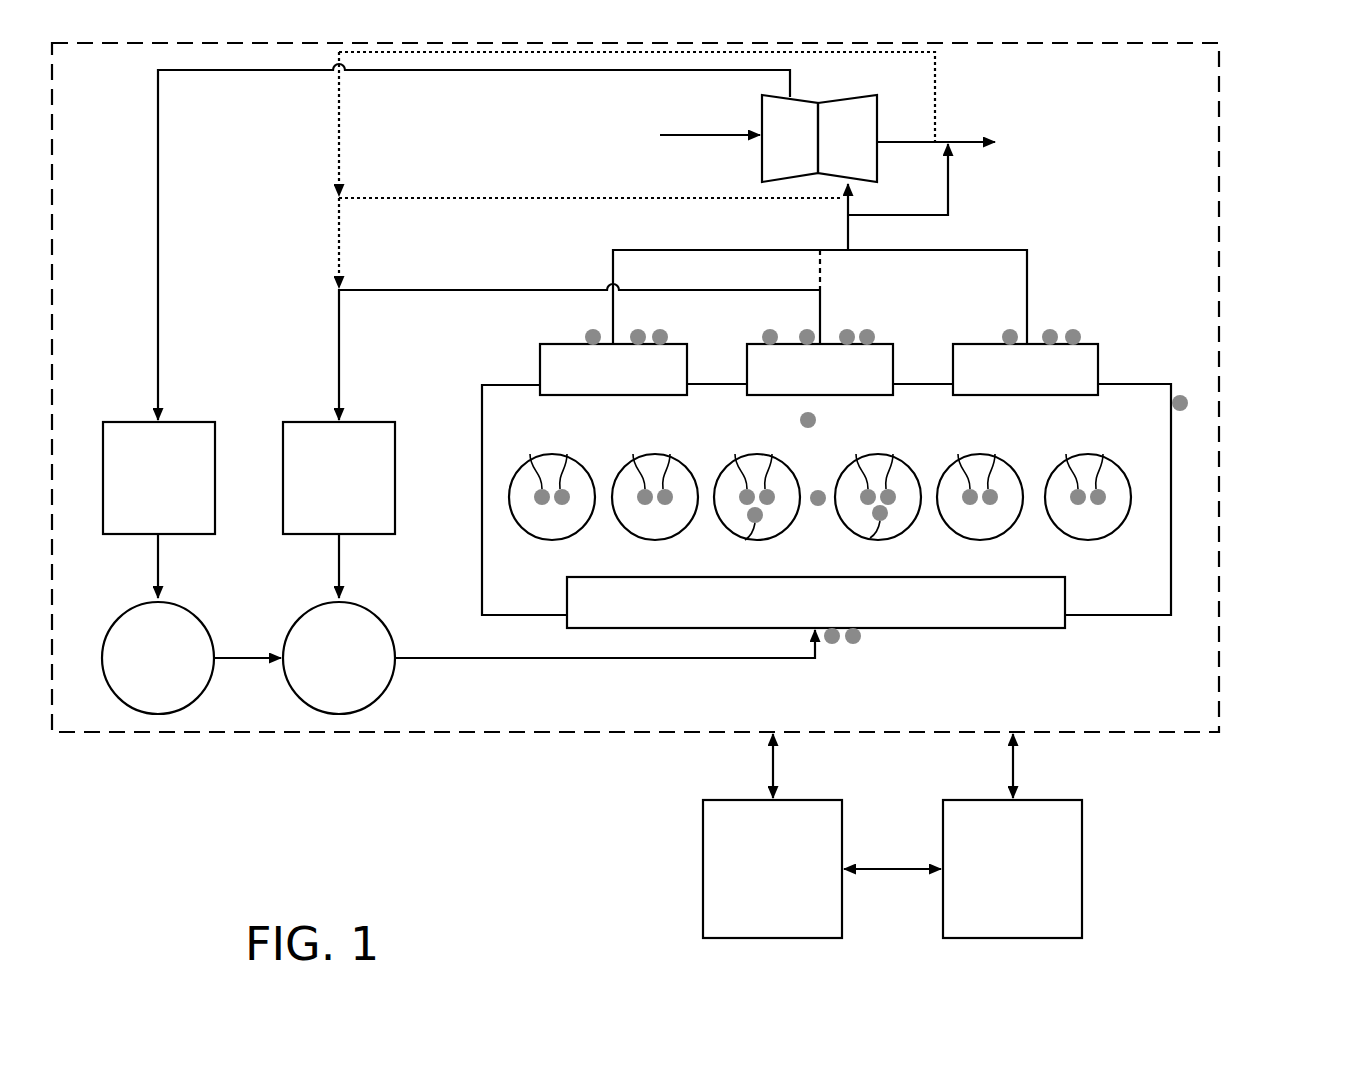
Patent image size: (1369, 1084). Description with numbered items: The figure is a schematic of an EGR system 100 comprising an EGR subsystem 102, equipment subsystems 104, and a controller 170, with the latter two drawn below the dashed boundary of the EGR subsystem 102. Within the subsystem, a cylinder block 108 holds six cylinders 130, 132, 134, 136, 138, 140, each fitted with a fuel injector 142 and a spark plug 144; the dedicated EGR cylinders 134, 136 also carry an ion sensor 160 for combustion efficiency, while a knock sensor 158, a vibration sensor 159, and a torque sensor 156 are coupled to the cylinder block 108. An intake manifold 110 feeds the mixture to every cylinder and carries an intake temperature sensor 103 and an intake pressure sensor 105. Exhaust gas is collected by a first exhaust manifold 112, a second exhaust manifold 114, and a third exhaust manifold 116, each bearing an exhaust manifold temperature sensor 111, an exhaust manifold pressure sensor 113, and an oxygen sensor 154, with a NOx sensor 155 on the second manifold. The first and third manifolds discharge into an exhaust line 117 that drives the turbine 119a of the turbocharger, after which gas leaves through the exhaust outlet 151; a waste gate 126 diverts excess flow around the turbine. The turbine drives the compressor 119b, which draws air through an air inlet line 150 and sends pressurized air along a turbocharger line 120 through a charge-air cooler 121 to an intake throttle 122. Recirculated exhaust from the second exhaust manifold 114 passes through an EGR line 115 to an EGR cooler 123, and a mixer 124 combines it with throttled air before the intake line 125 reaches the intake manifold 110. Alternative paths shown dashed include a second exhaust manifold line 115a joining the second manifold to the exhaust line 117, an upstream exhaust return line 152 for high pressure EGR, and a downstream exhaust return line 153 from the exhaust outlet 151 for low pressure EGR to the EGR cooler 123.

The EGR system 100 is at (1283, 157).
The EGR subsystem 102 is at (1222, 652).
The intake temperature sensor 103 is at (834, 645).
The equipment subsystems 104 is at (843, 820).
The intake pressure sensor 105 is at (860, 640).
The cylinder block 108 is at (482, 542).
The intake manifold 110 is at (1067, 600).
The exhaust manifold temperature sensor 111 is at (638, 329).
The first exhaust manifold 112 is at (540, 371).
The exhaust manifold pressure sensor 113 is at (668, 336).
The second exhaust manifold 114 is at (895, 352).
The EGR line 115 is at (430, 290).
The second exhaust manifold line 115a is at (818, 262).
The third exhaust manifold 116 is at (1100, 353).
The exhaust line 117 is at (846, 228).
The turbine 119a is at (819, 92).
The compressor 119b is at (762, 100).
The turbocharger line 120 is at (435, 72).
The charge-air cooler 121 is at (216, 425).
The intake throttle 122 is at (196, 612).
The EGR cooler 123 is at (396, 430).
The mixer 124 is at (380, 612).
The intake line 125 is at (532, 660).
The waste gate 126 is at (950, 197).
The cylinder 130 is at (558, 540).
The cylinder 132 is at (661, 540).
The dedicated EGR cylinder 134 is at (763, 540).
The dedicated EGR cylinder 136 is at (884, 540).
The cylinder 138 is at (986, 540).
The cylinder 140 is at (1094, 540).
The fuel injector 142 is at (845, 468).
The spark plug 144 is at (803, 463).
The air inlet line 150 is at (692, 137).
The exhaust outlet 151 is at (965, 141).
The upstream exhaust return line 152 is at (555, 200).
The downstream exhaust return line 153 is at (935, 90).
The oxygen sensor 154 is at (593, 329).
The NOx sensor 155 is at (770, 329).
The torque sensor 156 is at (1182, 411).
The knock sensor 158 is at (820, 506).
The vibration sensor 159 is at (810, 428).
The ion sensor 160 is at (740, 540).
The controller 170 is at (1083, 857).